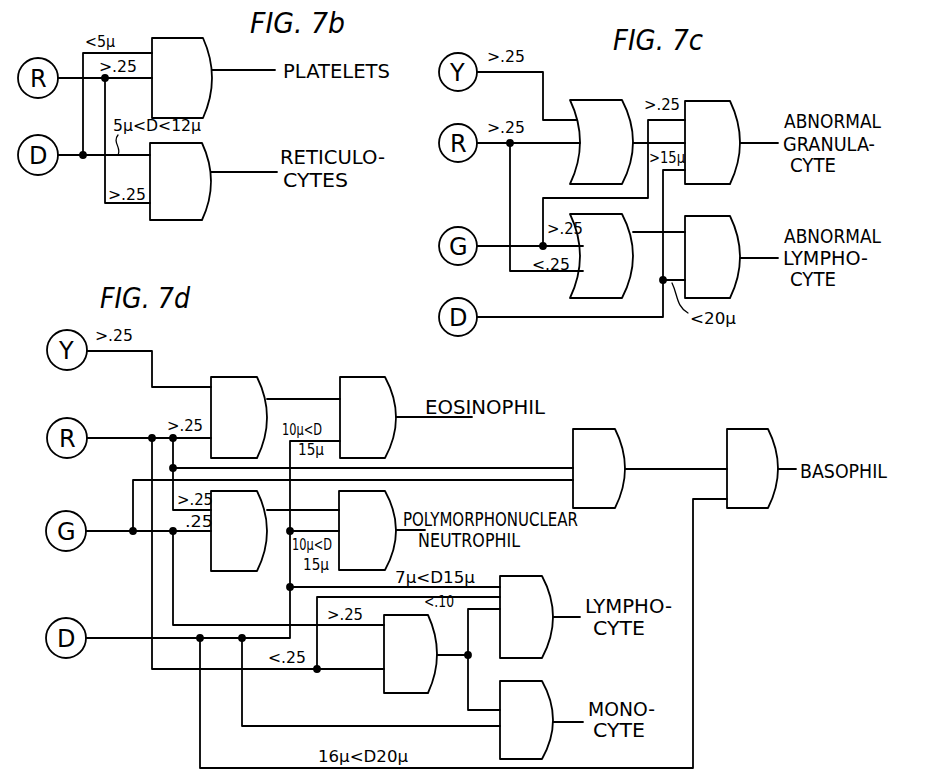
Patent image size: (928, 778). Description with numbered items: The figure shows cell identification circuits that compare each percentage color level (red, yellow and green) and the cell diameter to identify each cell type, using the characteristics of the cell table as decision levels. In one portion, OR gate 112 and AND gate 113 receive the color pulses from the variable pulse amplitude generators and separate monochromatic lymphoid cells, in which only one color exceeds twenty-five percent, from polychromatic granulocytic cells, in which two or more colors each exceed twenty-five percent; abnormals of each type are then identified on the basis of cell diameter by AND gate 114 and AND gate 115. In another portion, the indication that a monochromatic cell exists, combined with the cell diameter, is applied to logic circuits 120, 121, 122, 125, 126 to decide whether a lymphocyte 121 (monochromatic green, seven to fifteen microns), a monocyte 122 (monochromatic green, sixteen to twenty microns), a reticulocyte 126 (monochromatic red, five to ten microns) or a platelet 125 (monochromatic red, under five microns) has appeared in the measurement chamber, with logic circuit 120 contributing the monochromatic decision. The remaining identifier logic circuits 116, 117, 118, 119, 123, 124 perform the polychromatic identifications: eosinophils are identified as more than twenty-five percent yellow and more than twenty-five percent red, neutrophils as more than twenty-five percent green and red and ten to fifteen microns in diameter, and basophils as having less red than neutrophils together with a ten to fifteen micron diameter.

In FIG. 7C, the OR gate 112 is at (608, 154).
In FIG. 7C, the AND gate 113 is at (608, 268).
In FIG. 7C, the AND gate 114 is at (716, 156).
In FIG. 7C, the AND gate 115 is at (712, 257).
In FIG. 7D, the identifier logic circuit 116 is at (242, 430).
In FIG. 7D, the identifier logic circuit 117 is at (242, 544).
In FIG. 7D, the identifier logic circuit 118 is at (370, 430).
In FIG. 7D, the identifier logic circuit 119 is at (366, 544).
In FIG. 7D, the logic circuit 120 is at (412, 667).
In FIG. 7D, the lymphocyte logic circuit 121 is at (530, 629).
In FIG. 7D, the monocyte logic circuit 122 is at (532, 732).
In FIG. 7D, the identifier logic circuit 123 is at (607, 481).
In FIG. 7D, the identifier logic circuit 124 is at (761, 481).
In FIG. 7B, the platelet logic circuit 125 is at (193, 91).
In FIG. 7B, the reticulocyte logic circuit 126 is at (180, 181).